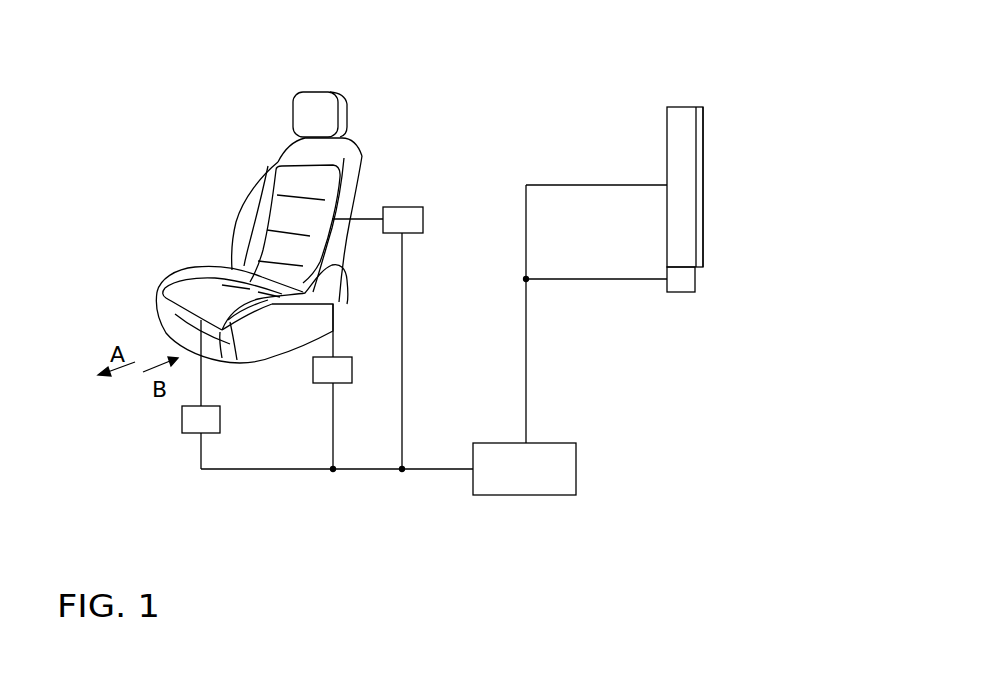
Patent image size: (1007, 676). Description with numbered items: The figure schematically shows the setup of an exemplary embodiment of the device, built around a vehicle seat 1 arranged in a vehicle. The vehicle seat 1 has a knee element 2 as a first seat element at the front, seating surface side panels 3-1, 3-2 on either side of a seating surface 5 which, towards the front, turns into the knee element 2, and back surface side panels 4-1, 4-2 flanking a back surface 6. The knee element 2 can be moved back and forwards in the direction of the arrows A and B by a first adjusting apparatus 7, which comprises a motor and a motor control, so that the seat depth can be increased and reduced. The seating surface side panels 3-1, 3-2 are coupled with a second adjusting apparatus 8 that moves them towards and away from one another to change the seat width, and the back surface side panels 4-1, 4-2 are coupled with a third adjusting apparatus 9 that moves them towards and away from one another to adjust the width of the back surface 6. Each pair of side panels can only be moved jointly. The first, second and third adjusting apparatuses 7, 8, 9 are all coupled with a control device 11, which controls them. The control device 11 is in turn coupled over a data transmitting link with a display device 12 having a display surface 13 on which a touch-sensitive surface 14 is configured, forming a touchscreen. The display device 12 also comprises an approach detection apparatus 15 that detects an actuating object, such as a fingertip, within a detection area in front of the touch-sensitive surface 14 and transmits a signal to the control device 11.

The vehicle seat 1 is at (249, 162).
The knee element 2 is at (183, 313).
The seating surface side panel 3-1 is at (257, 313).
The seating surface side panel 3-2 is at (205, 274).
The back surface side panel 4-1 is at (341, 205).
The back surface side panel 4-2 is at (253, 213).
The seating surface 5 is at (212, 292).
The back surface 6 is at (302, 182).
The first adjusting apparatus 7 is at (195, 420).
The second adjusting apparatus 8 is at (338, 369).
The third adjusting apparatus 9 is at (403, 220).
The control device 11 is at (523, 478).
The display device 12 is at (678, 86).
The display surface 13 is at (696, 147).
The touch-sensitive surface 14 is at (704, 185).
The approach detection apparatus 15 is at (680, 280).